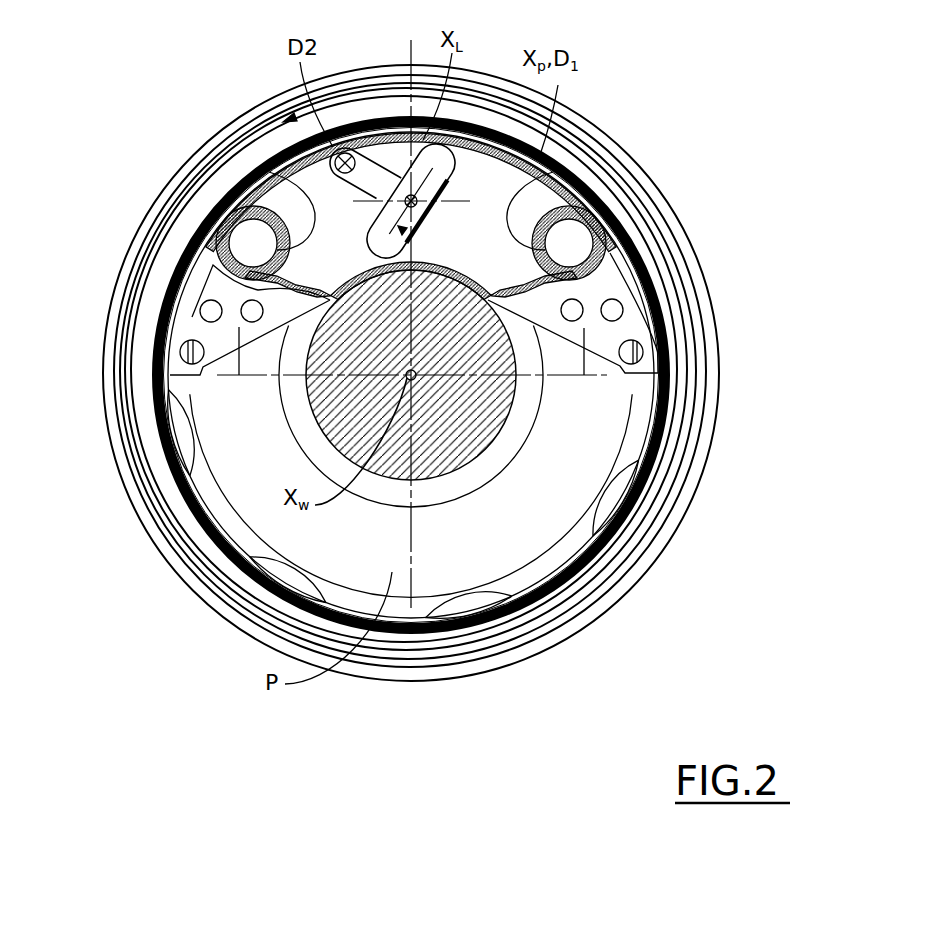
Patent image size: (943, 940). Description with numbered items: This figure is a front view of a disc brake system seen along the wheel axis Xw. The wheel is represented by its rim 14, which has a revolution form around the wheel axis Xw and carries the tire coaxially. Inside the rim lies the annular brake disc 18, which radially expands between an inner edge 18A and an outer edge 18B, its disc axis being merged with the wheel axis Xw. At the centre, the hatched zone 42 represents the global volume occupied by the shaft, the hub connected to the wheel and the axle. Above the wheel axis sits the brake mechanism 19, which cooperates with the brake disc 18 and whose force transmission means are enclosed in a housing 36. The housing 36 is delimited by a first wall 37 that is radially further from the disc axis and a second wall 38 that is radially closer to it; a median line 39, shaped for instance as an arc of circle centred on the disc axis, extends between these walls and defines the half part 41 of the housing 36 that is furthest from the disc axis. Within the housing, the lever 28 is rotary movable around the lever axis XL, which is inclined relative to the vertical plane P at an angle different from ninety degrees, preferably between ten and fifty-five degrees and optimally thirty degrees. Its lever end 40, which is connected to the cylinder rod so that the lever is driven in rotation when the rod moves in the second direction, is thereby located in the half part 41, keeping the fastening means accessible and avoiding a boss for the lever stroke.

The rim 14 is at (592, 195).
The brake disc 18 is at (592, 415).
The inner edge 18A is at (443, 415).
The outer edge 18B is at (597, 563).
The brake mechanism 19 is at (297, 133).
The lever 28 is at (380, 147).
The housing 36 is at (537, 203).
The first wall 37 is at (547, 242).
The second wall 38 is at (462, 272).
The median line 39 is at (237, 360).
The lever end 40 is at (258, 195).
The half part of the housing 41 is at (613, 212).
The hatched zone 42 is at (441, 425).